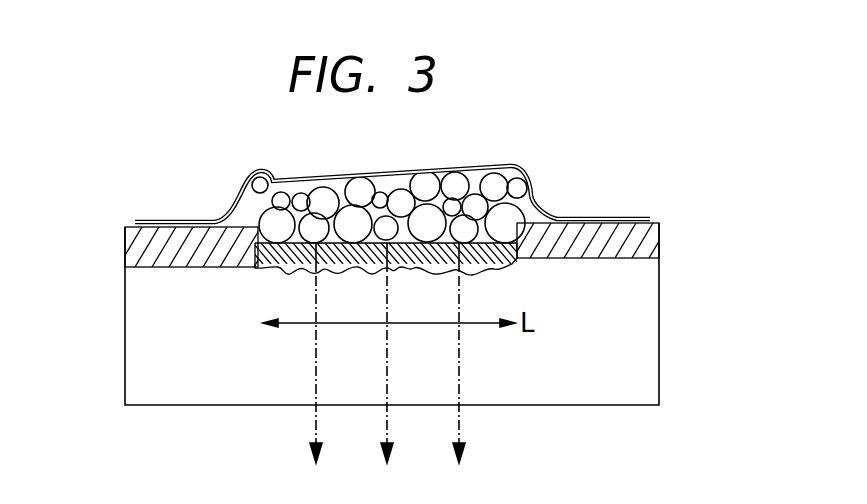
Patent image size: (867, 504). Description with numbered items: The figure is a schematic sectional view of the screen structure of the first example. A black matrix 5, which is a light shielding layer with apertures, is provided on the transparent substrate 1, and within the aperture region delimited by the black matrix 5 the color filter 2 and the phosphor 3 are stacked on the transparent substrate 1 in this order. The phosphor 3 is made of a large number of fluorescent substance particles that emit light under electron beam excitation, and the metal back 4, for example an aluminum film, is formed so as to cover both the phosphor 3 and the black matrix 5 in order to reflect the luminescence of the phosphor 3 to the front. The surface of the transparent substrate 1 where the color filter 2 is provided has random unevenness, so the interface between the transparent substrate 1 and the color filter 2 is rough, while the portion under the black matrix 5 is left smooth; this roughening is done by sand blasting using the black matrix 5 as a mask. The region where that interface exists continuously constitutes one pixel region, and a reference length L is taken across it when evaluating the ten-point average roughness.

The transparent substrate 1 is at (147, 346).
The color filter 2 is at (545, 258).
The phosphor 3 is at (267, 218).
The metal back 4 is at (395, 168).
The black matrix 5 is at (147, 240).